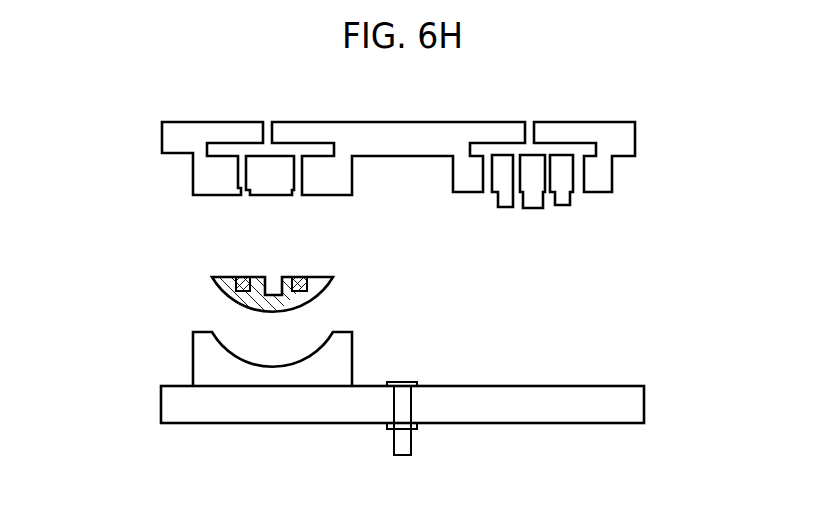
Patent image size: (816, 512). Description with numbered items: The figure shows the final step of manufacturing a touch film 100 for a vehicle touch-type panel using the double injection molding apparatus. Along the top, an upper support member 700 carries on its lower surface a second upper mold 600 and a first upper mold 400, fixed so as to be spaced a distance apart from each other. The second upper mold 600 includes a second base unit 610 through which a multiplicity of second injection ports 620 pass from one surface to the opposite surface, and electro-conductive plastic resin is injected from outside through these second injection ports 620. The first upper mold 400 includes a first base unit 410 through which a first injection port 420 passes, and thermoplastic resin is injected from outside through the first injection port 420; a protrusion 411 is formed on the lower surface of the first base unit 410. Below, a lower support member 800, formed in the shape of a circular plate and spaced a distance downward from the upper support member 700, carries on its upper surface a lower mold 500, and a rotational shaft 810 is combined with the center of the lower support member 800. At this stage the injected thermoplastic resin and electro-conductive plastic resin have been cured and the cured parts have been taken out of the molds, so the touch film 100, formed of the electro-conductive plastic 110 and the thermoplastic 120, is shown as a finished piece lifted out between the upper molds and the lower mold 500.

The touch film 100 is at (236, 261).
The electro-conductive plastic 110 is at (260, 263).
The thermoplastic 120 is at (213, 298).
The first upper mold 400 is at (634, 180).
The first base unit 410 is at (615, 163).
The protrusion 411 is at (570, 194).
The first injection port 420 is at (599, 197).
The lower mold 500 is at (193, 358).
The second upper mold 600 is at (155, 165).
The second base unit 610 is at (193, 165).
The second injection port 620 is at (241, 181).
The upper support member 700 is at (635, 138).
The lower support member 800 is at (160, 405).
The rotational shaft 810 is at (412, 442).